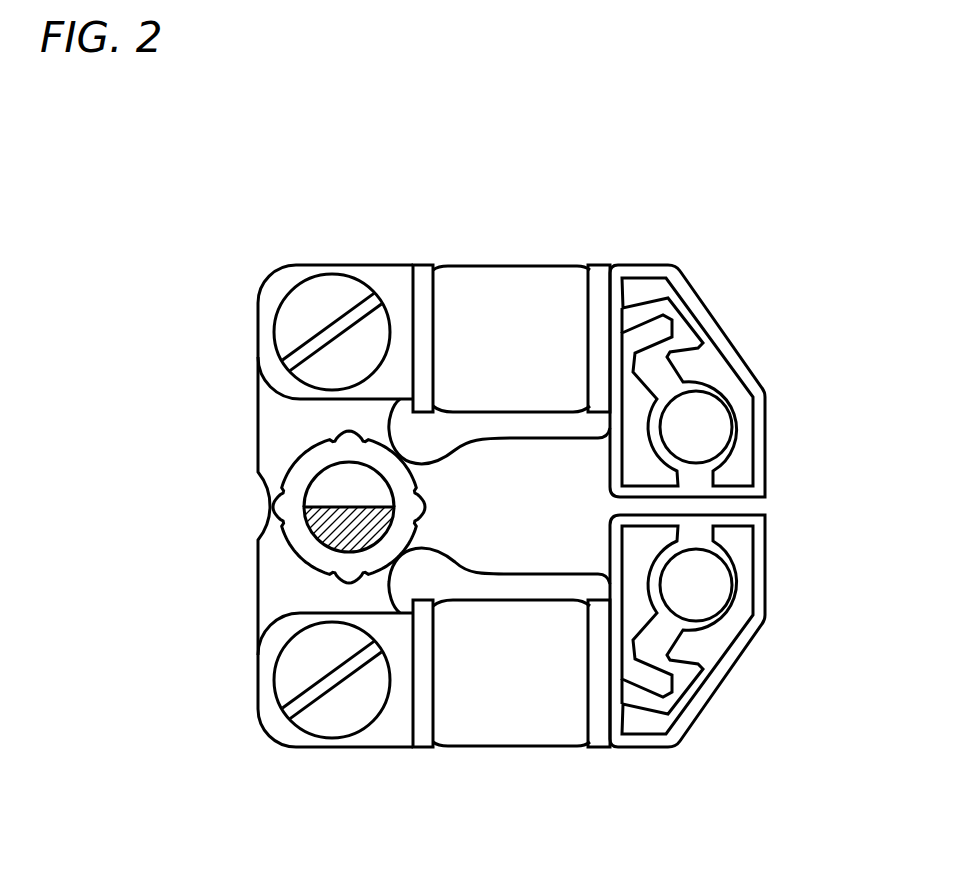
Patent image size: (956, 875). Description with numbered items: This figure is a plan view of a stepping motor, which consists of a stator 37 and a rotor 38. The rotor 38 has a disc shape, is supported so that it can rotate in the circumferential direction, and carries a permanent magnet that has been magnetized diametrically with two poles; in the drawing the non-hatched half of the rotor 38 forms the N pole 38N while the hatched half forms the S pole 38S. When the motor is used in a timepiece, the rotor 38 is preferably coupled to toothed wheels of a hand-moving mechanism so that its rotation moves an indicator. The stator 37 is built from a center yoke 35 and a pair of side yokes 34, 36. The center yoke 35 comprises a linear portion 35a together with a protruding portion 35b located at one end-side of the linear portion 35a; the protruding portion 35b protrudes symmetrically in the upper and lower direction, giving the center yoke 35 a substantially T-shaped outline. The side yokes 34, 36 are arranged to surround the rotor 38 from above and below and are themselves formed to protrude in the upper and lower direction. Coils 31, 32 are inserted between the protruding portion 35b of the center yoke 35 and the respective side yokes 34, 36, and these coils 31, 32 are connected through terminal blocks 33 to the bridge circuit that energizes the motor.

The coil 31 is at (483, 732).
The coil 32 is at (483, 282).
The terminal block 33 is at (707, 367).
The side yoke 34 is at (395, 732).
The center yoke 35 is at (533, 449).
The linear portion 35a is at (530, 462).
The protruding portion 35b is at (632, 475).
The side yoke 36 is at (395, 282).
The stator 37 is at (758, 508).
The rotor 38 is at (262, 507).
The N pole 38N is at (337, 482).
The S pole 38S is at (333, 533).